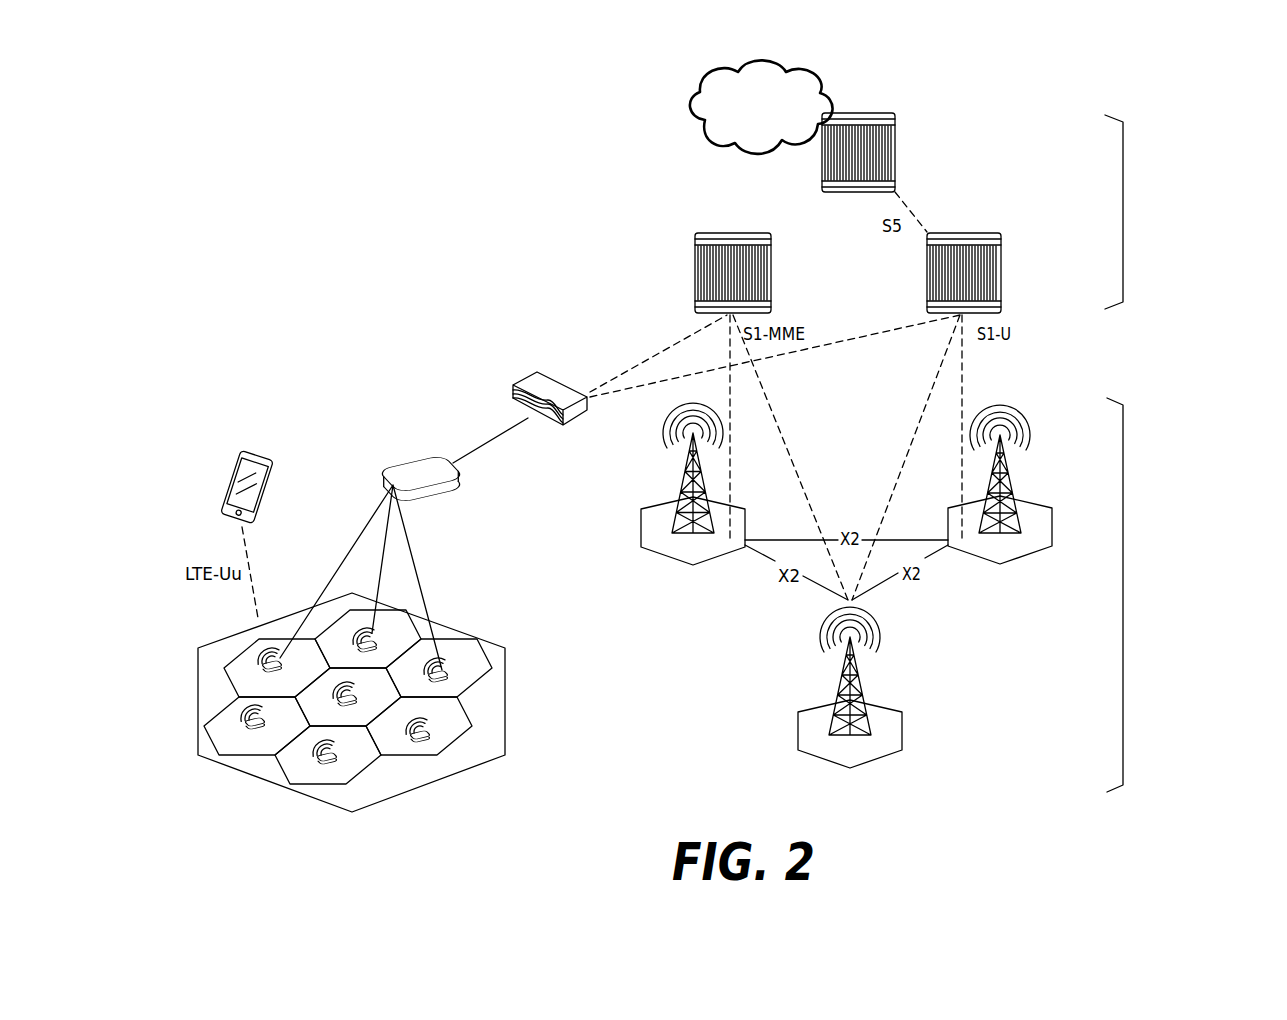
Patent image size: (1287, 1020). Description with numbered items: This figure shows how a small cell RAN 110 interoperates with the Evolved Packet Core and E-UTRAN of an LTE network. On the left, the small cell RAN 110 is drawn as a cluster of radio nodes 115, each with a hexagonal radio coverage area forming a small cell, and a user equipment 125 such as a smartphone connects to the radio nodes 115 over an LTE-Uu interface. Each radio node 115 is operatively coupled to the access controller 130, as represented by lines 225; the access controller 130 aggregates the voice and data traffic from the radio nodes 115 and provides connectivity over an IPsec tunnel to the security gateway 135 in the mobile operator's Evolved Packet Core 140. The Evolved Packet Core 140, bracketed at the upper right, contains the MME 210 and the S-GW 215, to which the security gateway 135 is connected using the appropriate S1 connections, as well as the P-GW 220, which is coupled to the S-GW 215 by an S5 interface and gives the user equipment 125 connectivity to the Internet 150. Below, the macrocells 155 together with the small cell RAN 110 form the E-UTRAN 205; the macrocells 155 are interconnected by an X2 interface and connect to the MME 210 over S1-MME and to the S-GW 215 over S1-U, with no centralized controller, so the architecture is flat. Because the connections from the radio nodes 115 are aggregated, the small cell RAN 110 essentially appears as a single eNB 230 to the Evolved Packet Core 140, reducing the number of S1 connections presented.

The small cell RAN 110 is at (380, 701).
The radio node 115 is at (477, 711).
The user equipment 125 is at (235, 463).
The access controller 130 is at (404, 460).
The security gateway 135 is at (548, 372).
The Evolved Packet Core 140 is at (1123, 208).
The Internet 150 is at (696, 86).
The macrocell 155 is at (1088, 495).
The E-UTRAN 205 is at (1123, 583).
The MME 210 is at (771, 243).
The S-GW 215 is at (1001, 265).
The P-GW 220 is at (895, 127).
The lines 225 is at (407, 533).
The single eNB 230 is at (505, 658).